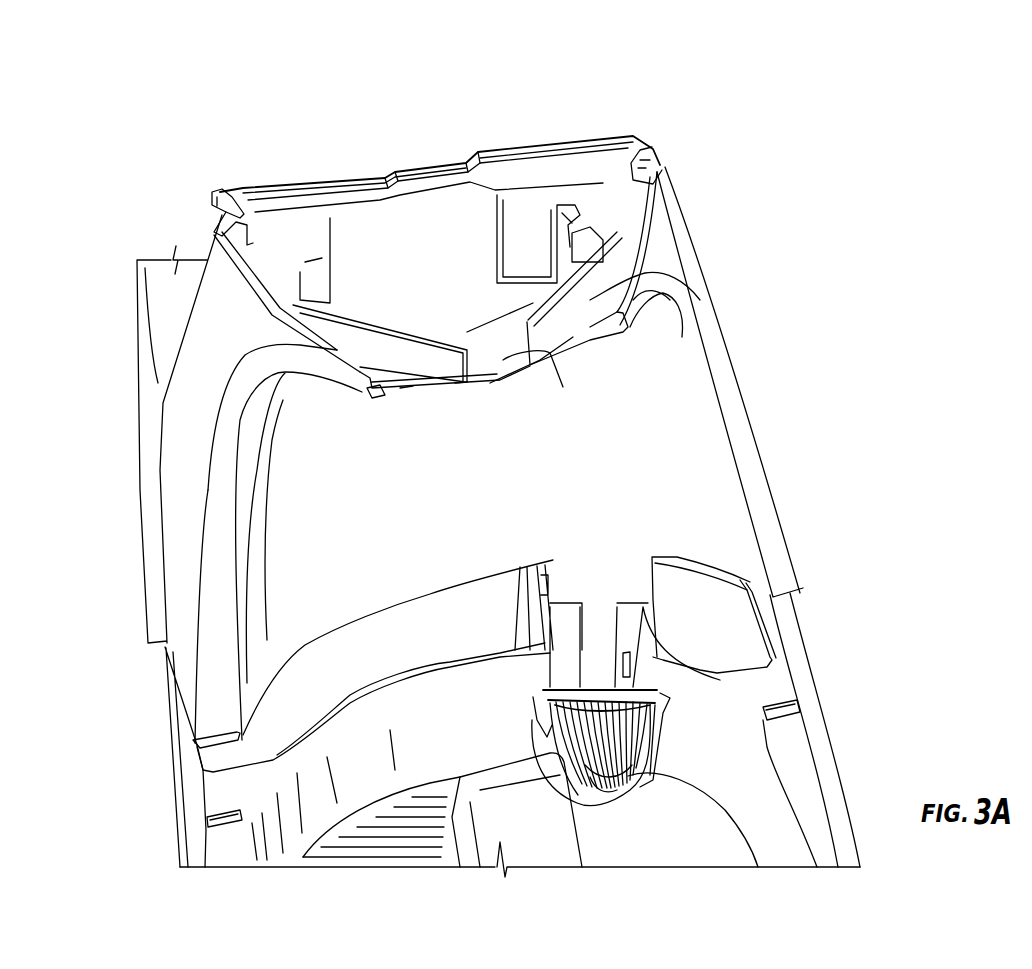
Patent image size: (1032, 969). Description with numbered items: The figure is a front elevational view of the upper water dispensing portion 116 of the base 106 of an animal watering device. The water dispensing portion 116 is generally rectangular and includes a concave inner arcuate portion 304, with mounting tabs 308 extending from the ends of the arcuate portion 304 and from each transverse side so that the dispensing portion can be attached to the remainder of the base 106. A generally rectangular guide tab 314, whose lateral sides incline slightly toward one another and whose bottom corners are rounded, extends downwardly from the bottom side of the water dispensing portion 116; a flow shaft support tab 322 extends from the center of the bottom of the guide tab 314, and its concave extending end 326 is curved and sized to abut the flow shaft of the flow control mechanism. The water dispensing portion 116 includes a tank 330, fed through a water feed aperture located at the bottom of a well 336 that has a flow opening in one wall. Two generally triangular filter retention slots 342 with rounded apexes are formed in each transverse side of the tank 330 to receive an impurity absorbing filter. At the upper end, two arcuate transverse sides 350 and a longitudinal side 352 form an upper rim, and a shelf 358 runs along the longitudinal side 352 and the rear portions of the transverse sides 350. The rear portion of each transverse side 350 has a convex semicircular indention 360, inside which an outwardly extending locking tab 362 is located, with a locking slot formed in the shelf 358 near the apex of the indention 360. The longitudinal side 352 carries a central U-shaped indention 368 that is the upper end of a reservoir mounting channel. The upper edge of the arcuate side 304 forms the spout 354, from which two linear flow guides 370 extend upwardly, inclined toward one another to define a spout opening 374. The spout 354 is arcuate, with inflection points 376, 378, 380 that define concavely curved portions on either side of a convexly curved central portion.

The base 106 is at (783, 681).
The upper water dispensing portion 116 is at (604, 427).
The concave inner arcuate portion 304 is at (320, 467).
The mounting tabs 308 is at (195, 745).
The guide tab 314 is at (612, 575).
The flow shaft support tab 322 is at (590, 620).
The extending end 326 is at (548, 690).
The tank 330 is at (370, 258).
The well 336 is at (513, 230).
The filter retention slots 342 is at (322, 237).
The arcuate transverse sides 350 is at (290, 310).
The longitudinal side 352 is at (427, 205).
The spout 354 is at (460, 386).
The shelf 358 is at (633, 223).
The convex semicircular indention 360 is at (212, 233).
The locking tab 362 is at (220, 188).
The U-shaped indention 368 is at (458, 168).
The flow guides 370 is at (387, 335).
The spout opening 374 is at (563, 387).
The inflection point 376 is at (407, 390).
The inflection point 378 is at (497, 383).
The inflection point 380 is at (575, 344).